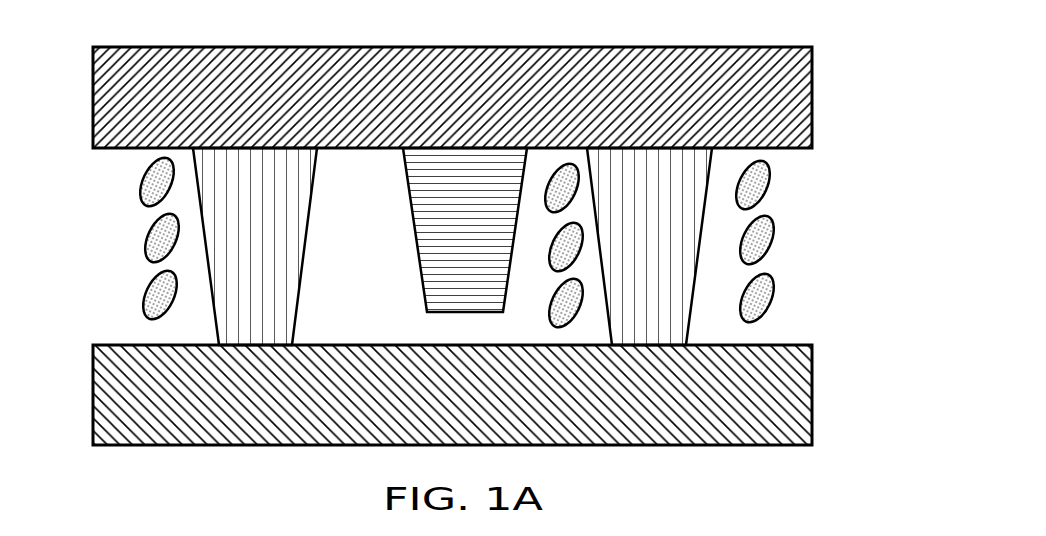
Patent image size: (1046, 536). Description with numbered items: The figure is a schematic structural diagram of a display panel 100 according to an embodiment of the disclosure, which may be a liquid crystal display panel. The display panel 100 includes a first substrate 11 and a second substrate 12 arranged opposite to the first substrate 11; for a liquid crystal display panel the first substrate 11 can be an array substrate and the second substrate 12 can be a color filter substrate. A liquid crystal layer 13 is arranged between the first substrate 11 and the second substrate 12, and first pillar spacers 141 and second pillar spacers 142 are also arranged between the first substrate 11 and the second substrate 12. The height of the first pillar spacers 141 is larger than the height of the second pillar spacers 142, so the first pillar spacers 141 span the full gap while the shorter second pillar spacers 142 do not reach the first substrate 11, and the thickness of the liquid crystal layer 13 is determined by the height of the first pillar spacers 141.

The display panel 100 is at (460, 222).
The first substrate 11 is at (812, 375).
The second substrate 12 is at (812, 98).
The liquid crystal layer 13 is at (770, 240).
The first pillar spacers 141 is at (367, 246).
The second pillar spacers 142 is at (420, 273).